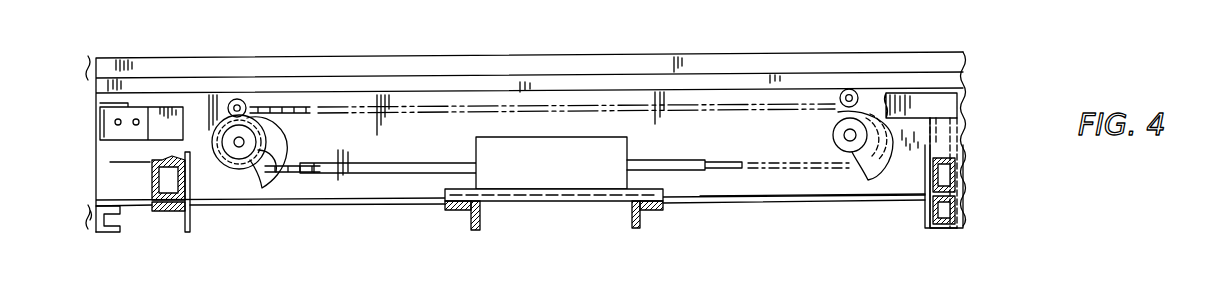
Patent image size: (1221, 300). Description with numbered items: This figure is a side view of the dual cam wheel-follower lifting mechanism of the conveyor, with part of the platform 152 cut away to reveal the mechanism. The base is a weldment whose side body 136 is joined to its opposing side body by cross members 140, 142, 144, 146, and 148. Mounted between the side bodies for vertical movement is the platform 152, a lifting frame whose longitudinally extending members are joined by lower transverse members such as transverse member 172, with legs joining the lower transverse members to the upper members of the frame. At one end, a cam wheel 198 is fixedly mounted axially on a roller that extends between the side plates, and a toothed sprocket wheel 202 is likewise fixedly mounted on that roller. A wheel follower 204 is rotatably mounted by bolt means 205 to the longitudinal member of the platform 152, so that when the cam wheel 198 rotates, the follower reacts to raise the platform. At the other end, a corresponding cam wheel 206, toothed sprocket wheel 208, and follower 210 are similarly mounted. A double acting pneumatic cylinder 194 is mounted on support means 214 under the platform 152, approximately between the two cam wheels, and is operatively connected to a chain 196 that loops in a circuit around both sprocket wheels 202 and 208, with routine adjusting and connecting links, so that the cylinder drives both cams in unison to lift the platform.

The side body 136 is at (828, 180).
The cross member 140 is at (120, 228).
The cross member 142 is at (184, 222).
The cross member 144 is at (945, 220).
The cross member 146 is at (470, 222).
The cross member 148 is at (645, 218).
The platform 152 is at (138, 80).
The transverse member 172 is at (150, 172).
The double acting pneumatic cylinder 194 is at (572, 176).
The chain 196 is at (290, 107).
The cam wheel 198 is at (290, 186).
The toothed sprocket wheel 202 is at (250, 139).
The wheel follower 204 is at (246, 100).
The bolt means 205 is at (233, 102).
The cam wheel 206 is at (880, 160).
The toothed sprocket wheel 208 is at (834, 136).
The follower 210 is at (852, 89).
The support means 214 is at (589, 209).